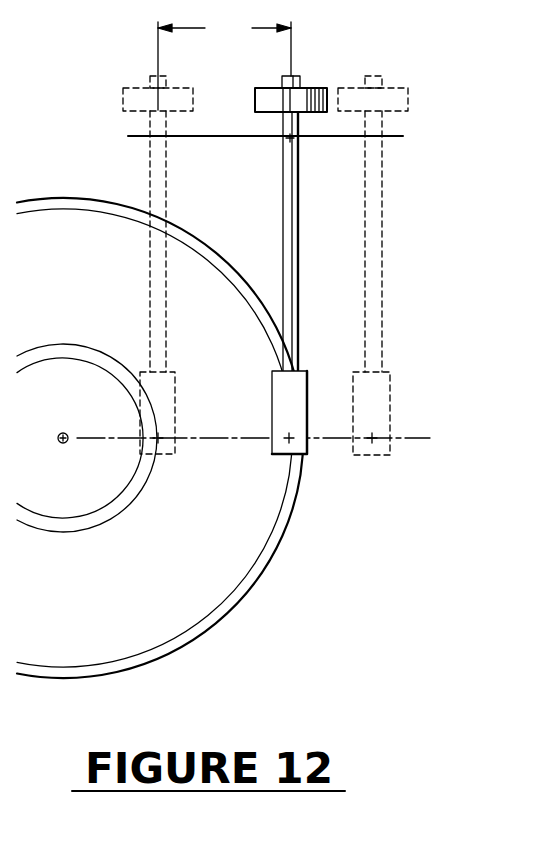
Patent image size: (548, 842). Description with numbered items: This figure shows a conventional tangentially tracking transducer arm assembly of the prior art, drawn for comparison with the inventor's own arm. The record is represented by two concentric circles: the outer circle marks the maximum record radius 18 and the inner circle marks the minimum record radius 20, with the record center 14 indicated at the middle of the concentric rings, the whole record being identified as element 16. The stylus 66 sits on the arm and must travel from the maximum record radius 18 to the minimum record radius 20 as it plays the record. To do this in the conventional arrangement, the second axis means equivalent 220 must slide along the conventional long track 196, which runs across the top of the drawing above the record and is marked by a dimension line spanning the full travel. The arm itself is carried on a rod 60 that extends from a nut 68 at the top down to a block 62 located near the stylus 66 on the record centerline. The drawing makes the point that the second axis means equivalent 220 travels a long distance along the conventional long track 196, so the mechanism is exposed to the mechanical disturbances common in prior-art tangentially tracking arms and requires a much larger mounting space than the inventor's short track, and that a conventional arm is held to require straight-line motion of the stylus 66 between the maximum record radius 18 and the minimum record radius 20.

The axis center of wheel 14 is at (58, 433).
The wheel 16 is at (65, 192).
The maximum record radius 18 is at (90, 213).
The minimum record radius 20 is at (62, 345).
The rod 60 is at (283, 222).
The block 62 is at (272, 417).
The stylus 66 is at (292, 445).
The nut 68 is at (310, 88).
The conventional long track 196 is at (224, 63).
The second axis means equivalent 220 is at (300, 143).